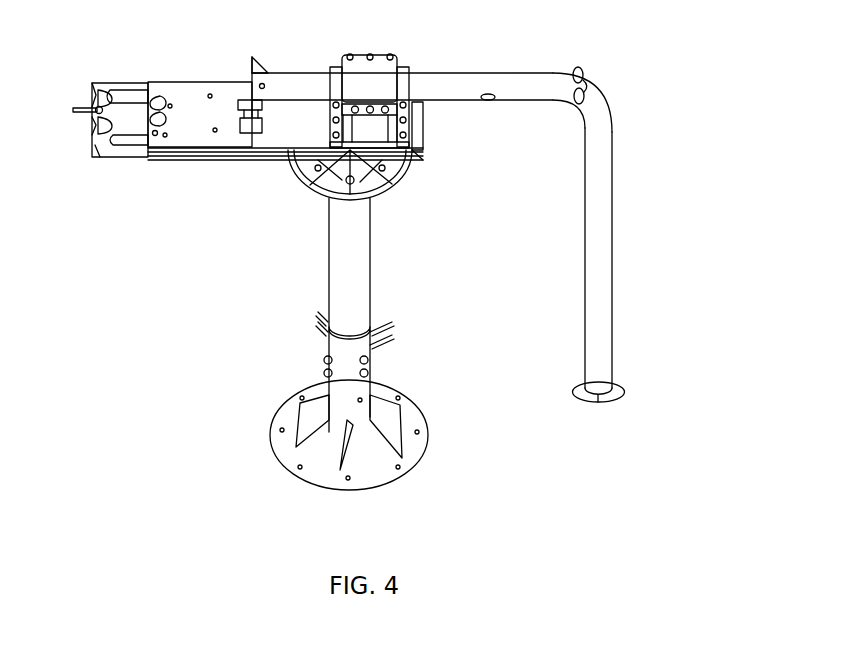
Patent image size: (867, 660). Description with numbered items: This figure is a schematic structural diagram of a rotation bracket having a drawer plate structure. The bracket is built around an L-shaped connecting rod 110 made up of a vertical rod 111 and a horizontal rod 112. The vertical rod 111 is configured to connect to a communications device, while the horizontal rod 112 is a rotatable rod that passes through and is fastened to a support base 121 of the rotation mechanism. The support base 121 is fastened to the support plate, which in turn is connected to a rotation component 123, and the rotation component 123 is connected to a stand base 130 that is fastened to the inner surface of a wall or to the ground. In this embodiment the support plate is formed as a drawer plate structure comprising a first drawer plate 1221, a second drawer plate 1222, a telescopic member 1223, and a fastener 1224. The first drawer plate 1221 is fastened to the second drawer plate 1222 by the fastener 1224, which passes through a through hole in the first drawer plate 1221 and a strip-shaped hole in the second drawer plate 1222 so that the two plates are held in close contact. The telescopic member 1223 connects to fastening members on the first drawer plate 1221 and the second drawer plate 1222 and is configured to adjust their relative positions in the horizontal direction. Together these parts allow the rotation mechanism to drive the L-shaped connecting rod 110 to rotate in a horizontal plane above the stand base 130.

The L-shaped connecting rod 110 is at (596, 108).
The vertical rod 111 is at (605, 210).
The horizontal rod 112 is at (441, 80).
The support base 121 is at (357, 62).
The rotation component 123 is at (400, 178).
The stand base 130 is at (335, 267).
The first drawer plate 1221 is at (198, 97).
The second drawer plate 1222 is at (110, 145).
The telescopic member 1223 is at (113, 100).
The fastener 1224 is at (180, 100).